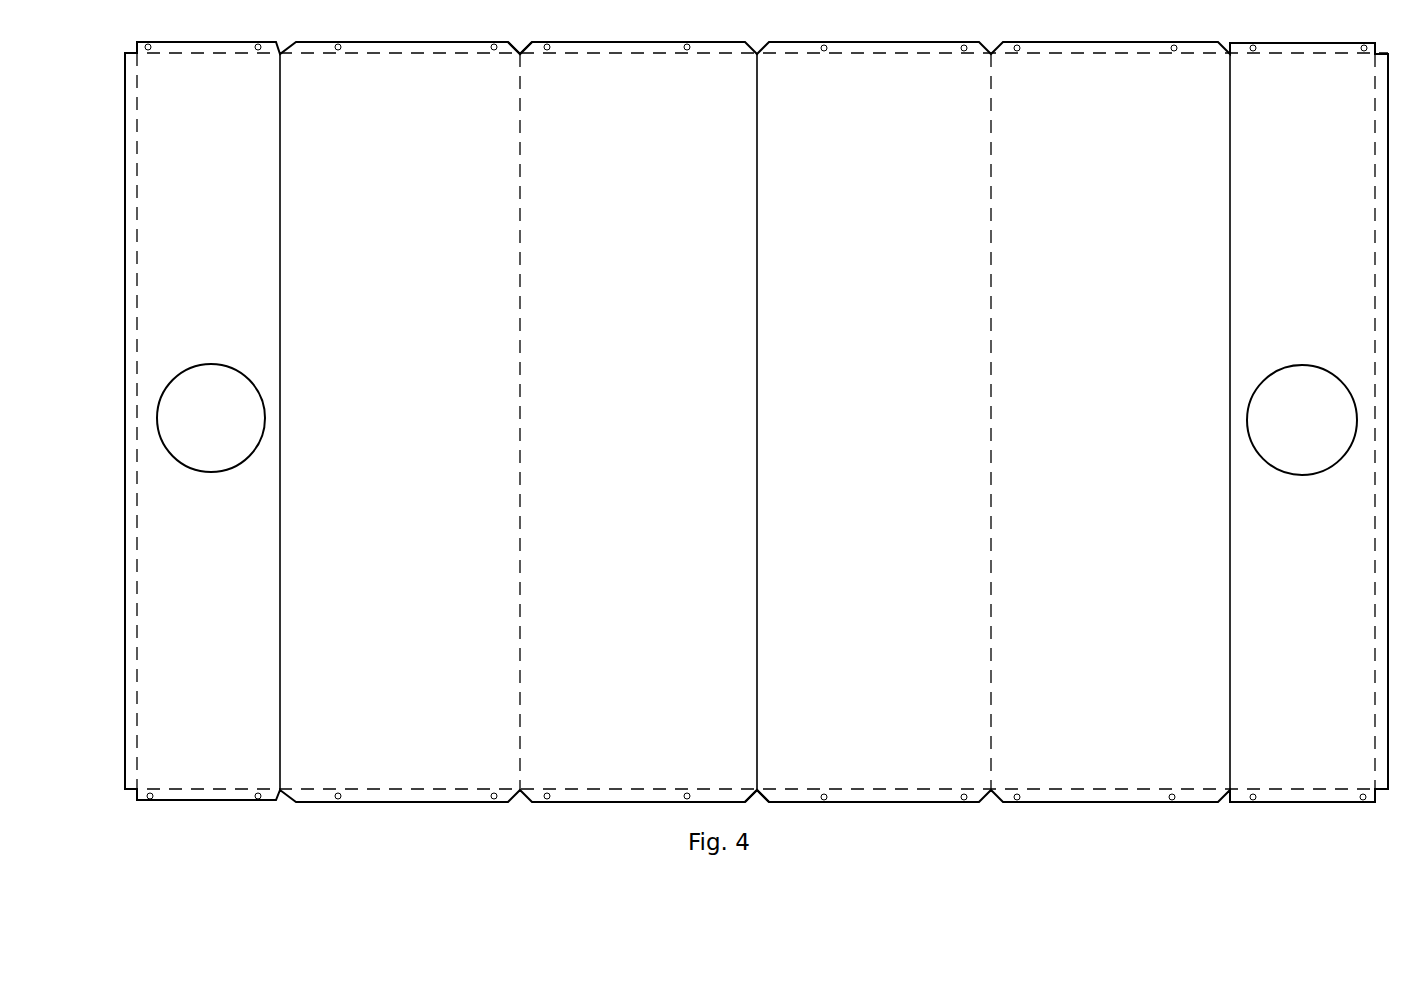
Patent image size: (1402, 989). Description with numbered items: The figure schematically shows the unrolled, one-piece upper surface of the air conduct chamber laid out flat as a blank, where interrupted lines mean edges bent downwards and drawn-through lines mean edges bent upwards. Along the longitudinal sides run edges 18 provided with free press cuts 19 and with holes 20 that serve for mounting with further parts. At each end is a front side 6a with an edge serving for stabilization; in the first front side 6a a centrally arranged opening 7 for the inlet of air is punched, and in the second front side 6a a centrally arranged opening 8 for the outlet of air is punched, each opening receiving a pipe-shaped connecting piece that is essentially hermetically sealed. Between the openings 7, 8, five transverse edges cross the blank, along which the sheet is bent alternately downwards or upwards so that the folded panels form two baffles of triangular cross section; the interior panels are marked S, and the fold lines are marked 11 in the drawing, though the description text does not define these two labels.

The front side 6a is at (203, 750).
The opening for the inlet of air 7 is at (227, 434).
The opening for the outlet of air 8 is at (1279, 436).
The fold line 11 is at (516, 390).
The edge 18 is at (424, 67).
The free press cut 19 is at (524, 66).
The hole 20 is at (827, 63).
The side panel S is at (737, 345).